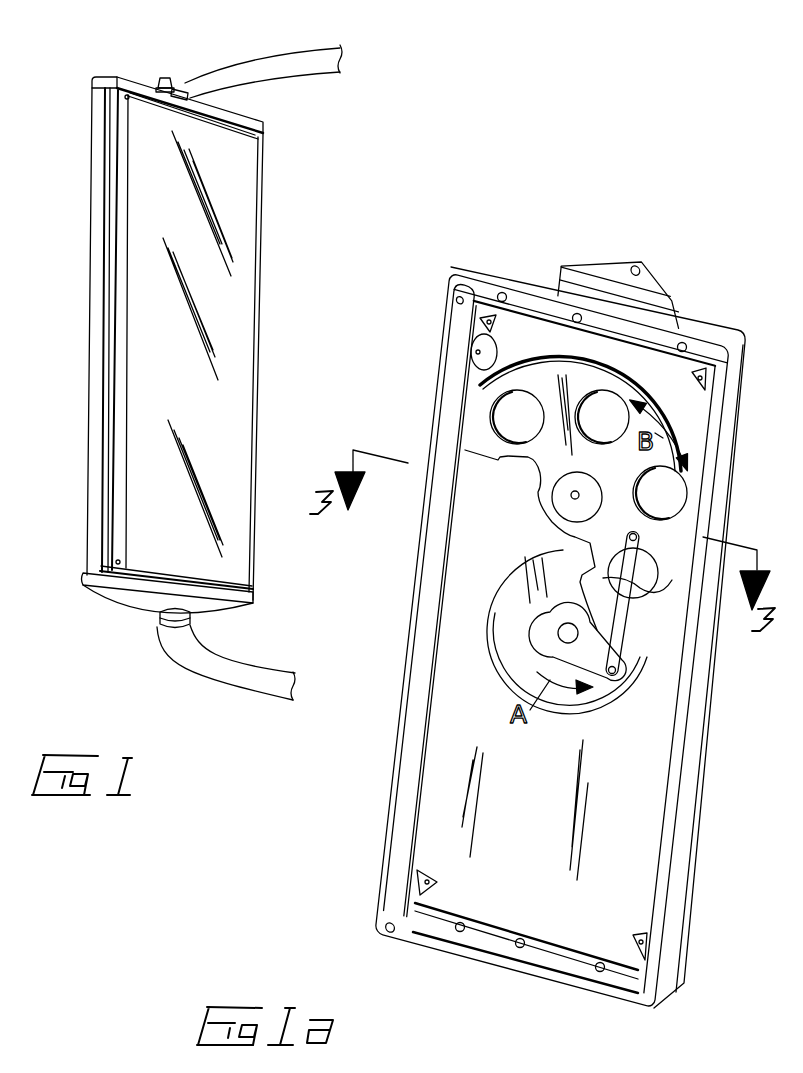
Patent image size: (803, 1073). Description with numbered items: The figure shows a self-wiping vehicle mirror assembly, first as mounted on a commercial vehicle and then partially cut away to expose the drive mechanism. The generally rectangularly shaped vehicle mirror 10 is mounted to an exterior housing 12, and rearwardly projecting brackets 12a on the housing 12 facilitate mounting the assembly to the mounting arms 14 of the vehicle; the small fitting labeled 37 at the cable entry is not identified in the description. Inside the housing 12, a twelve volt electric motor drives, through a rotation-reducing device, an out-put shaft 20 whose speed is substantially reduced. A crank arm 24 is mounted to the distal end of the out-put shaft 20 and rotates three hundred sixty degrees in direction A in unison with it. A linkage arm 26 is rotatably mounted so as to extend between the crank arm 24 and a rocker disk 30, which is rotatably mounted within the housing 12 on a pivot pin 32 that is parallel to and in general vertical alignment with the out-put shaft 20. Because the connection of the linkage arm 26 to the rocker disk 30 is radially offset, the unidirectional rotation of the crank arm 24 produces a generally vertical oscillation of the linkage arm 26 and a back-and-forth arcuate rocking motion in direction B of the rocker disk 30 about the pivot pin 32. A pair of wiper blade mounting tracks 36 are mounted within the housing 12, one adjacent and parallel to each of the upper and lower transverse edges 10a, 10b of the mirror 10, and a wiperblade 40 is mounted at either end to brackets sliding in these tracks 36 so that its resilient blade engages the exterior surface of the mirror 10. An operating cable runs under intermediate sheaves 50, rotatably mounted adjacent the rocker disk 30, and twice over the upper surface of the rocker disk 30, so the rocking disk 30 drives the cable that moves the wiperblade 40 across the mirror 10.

In FIG. 1, the vehicle mirror 10 is at (245, 183).
In FIG. 1, the upper transverse edge 10a is at (220, 134).
In FIG. 1, the lower transverse edge 10b is at (217, 568).
In FIG. 1, the exterior housing 12 is at (100, 126).
In FIG. 1A, the exterior housing 12 is at (507, 287).
In FIG. 1, the rearwardly projecting brackets 12a is at (143, 600).
In FIG. 1A, the rearwardly projecting brackets 12a is at (612, 266).
In FIG. 1, the mounting arms 14 is at (267, 70).
In FIG. 1A, the out-put shaft 20 is at (558, 633).
In FIG. 1A, the crank arm 24 is at (593, 653).
In FIG. 1A, the linkage arm 26 is at (618, 648).
In FIG. 1A, the rocker disk 30 is at (535, 452).
In FIG. 1A, the pivot pin 32 is at (572, 498).
In FIG. 1A, the wiper blade mounting tracks 36 is at (640, 337).
In FIG. 1, the cable fitting 37 is at (149, 88).
In FIG. 1, the wiperblade 40 is at (127, 212).
In FIG. 1A, the wiperblade 40 is at (448, 427).
In FIG. 1A, the intermediate sheaves 50 is at (482, 363).